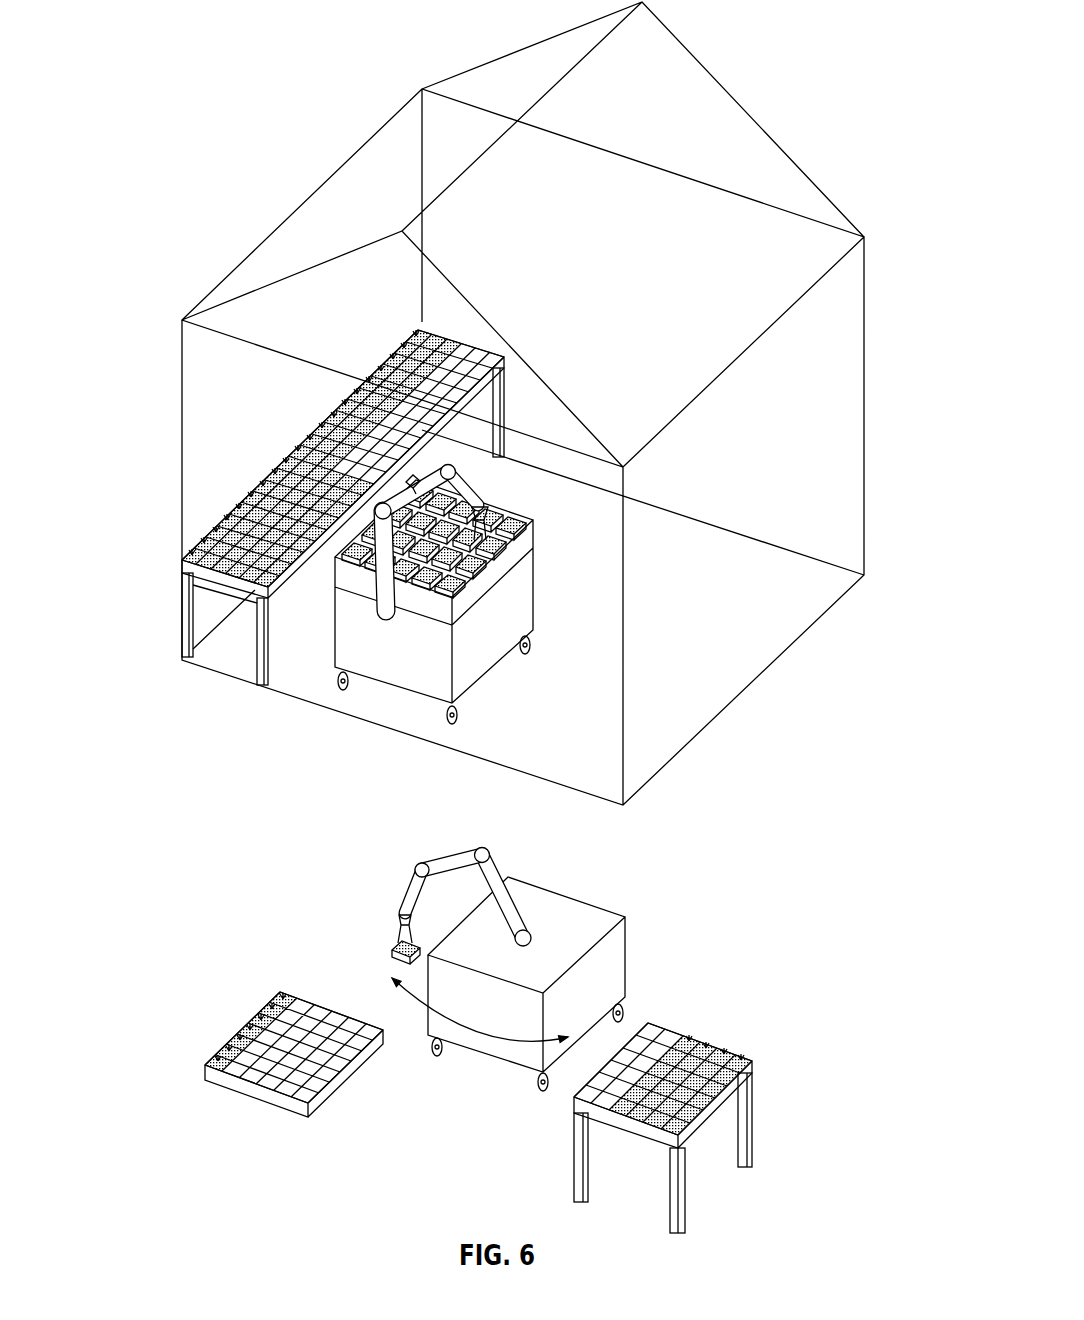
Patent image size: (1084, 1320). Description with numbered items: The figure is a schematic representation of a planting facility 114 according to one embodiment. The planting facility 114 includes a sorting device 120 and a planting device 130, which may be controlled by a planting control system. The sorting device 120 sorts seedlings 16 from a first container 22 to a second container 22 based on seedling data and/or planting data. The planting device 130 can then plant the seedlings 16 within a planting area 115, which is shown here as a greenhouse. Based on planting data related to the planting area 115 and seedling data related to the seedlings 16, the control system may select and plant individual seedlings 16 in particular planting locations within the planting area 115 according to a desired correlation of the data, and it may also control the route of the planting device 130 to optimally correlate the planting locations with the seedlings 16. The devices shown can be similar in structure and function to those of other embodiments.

The planting facility 114 is at (502, 403).
The planting area 115 is at (797, 154).
The seedlings 16 is at (494, 506).
The container 22 is at (537, 533).
The sorting device 120 is at (495, 847).
The planting device 130 is at (539, 601).